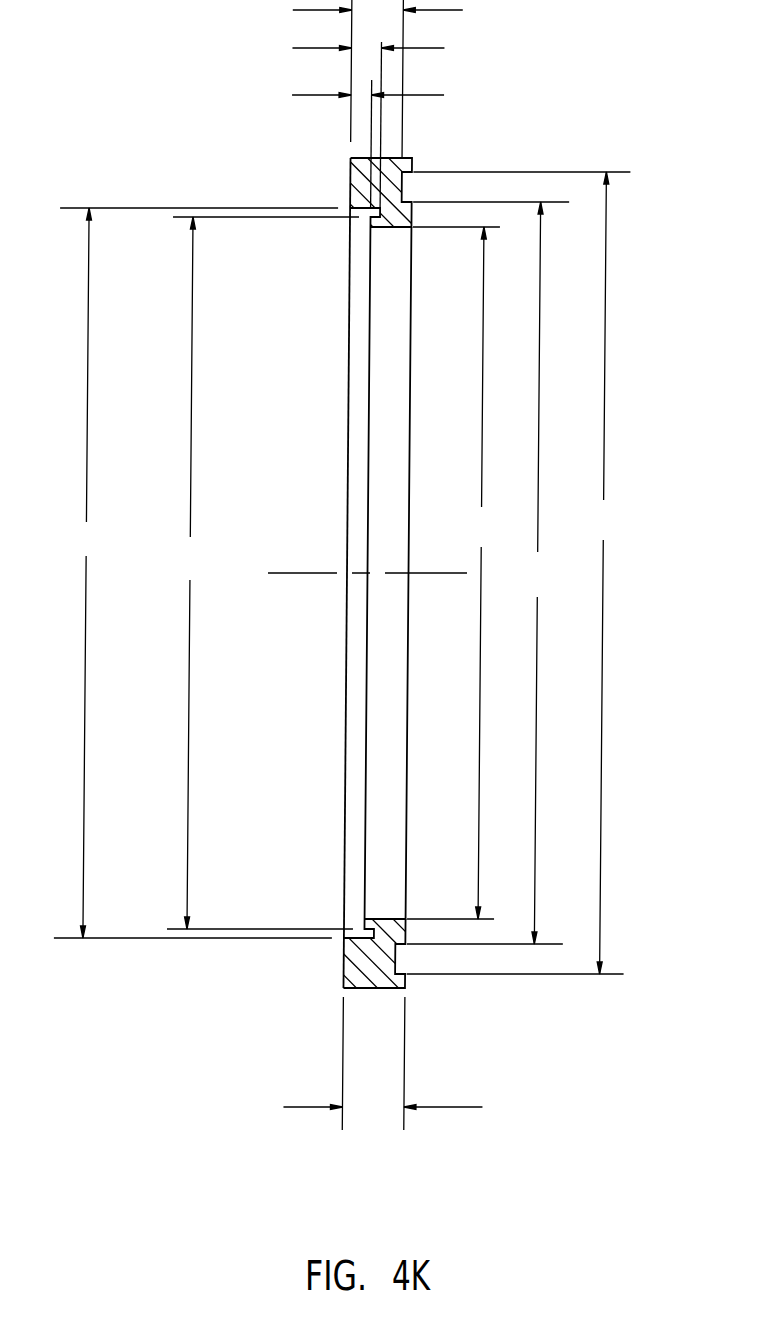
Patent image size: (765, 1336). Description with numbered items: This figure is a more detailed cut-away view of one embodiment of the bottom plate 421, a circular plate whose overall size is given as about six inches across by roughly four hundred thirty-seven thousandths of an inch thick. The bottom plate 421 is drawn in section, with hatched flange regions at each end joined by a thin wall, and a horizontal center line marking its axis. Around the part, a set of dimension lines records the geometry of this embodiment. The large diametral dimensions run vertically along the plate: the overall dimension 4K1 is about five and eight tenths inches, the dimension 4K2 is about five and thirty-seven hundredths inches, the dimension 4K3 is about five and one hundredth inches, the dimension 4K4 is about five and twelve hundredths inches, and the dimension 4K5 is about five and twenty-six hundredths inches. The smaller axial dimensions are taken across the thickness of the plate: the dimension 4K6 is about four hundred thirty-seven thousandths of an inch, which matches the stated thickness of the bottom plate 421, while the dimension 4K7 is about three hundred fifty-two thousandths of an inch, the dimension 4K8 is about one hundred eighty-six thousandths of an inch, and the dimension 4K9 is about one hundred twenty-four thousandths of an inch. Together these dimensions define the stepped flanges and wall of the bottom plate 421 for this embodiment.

The bottom plate 421 is at (240, 1023).
The bottom plate dimension 4K1 is at (519, 573).
The bottom plate dimension 4K2 is at (488, 573).
The bottom plate dimension 4K3 is at (454, 573).
The bottom plate dimension 4K4 is at (263, 573).
The bottom plate dimension 4K5 is at (196, 573).
The bottom plate dimension 4K6 is at (408, 1063).
The bottom plate dimension 4K7 is at (353, 79).
The bottom plate dimension 4K8 is at (344, 120).
The bottom plate dimension 4K9 is at (343, 144).